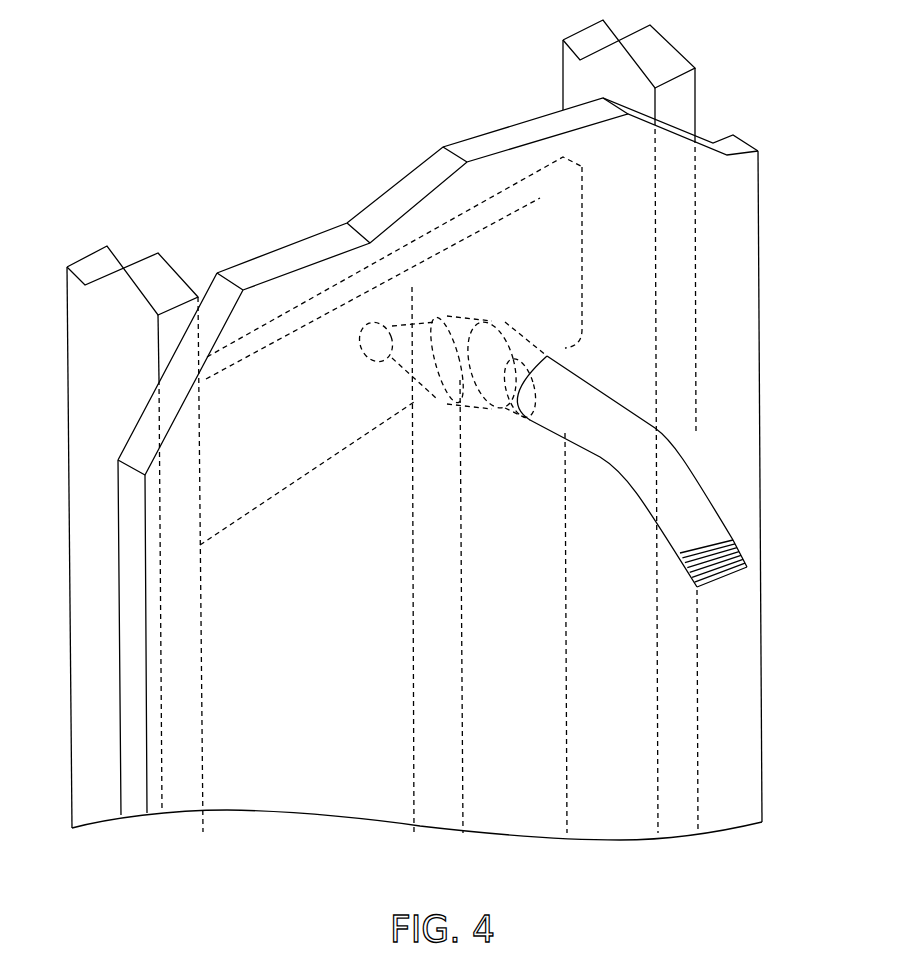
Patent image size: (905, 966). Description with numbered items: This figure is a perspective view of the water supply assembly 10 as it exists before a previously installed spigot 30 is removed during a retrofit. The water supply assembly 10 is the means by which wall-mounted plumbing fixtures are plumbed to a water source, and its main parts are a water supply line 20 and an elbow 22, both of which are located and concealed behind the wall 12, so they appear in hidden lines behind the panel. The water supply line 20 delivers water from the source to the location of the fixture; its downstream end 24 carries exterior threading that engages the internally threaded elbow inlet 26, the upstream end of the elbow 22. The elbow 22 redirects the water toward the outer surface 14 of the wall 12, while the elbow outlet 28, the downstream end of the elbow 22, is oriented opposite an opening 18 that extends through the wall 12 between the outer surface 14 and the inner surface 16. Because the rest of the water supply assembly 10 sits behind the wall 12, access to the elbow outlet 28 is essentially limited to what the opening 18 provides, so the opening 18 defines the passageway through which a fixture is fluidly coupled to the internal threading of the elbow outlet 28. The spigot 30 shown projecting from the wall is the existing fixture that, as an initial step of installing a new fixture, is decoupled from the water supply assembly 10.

The water supply assembly 10 is at (413, 563).
The wall 12 is at (728, 140).
The outer surface 14 is at (732, 227).
The inner surface 16 is at (389, 190).
The opening 18 is at (517, 343).
The water supply line 20 is at (432, 519).
The elbow 22 is at (432, 302).
The downstream end 24 is at (434, 400).
The elbow inlet 26 is at (408, 395).
The elbow outlet 28 is at (492, 388).
The spigot 30 is at (672, 467).